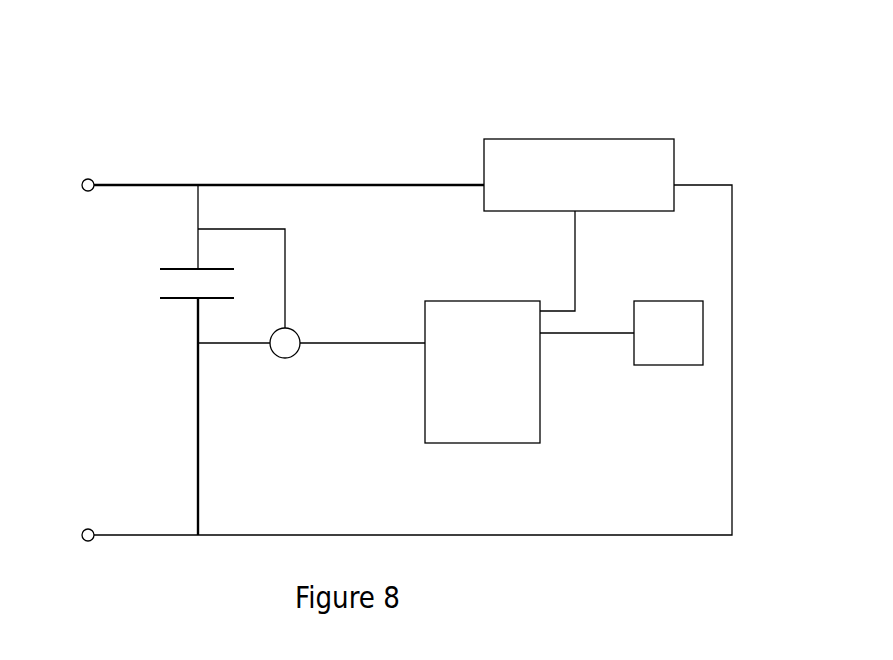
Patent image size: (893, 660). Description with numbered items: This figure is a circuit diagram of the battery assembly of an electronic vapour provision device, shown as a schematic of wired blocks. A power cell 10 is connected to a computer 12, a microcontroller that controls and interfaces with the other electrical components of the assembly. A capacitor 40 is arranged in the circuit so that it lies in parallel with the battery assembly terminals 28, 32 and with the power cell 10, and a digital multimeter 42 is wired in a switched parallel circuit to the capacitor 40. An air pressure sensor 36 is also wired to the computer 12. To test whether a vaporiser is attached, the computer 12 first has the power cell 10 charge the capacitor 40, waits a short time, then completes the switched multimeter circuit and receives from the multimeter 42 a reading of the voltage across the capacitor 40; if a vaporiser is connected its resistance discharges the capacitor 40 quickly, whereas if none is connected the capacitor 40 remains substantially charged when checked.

The power cell 10 is at (563, 175).
The computer 12 is at (474, 317).
The first terminal 28 is at (82, 185).
The second terminal 32 is at (83, 536).
The air pressure sensor 36 is at (665, 345).
The capacitor 40 is at (165, 300).
The digital multimeter 42 is at (288, 347).